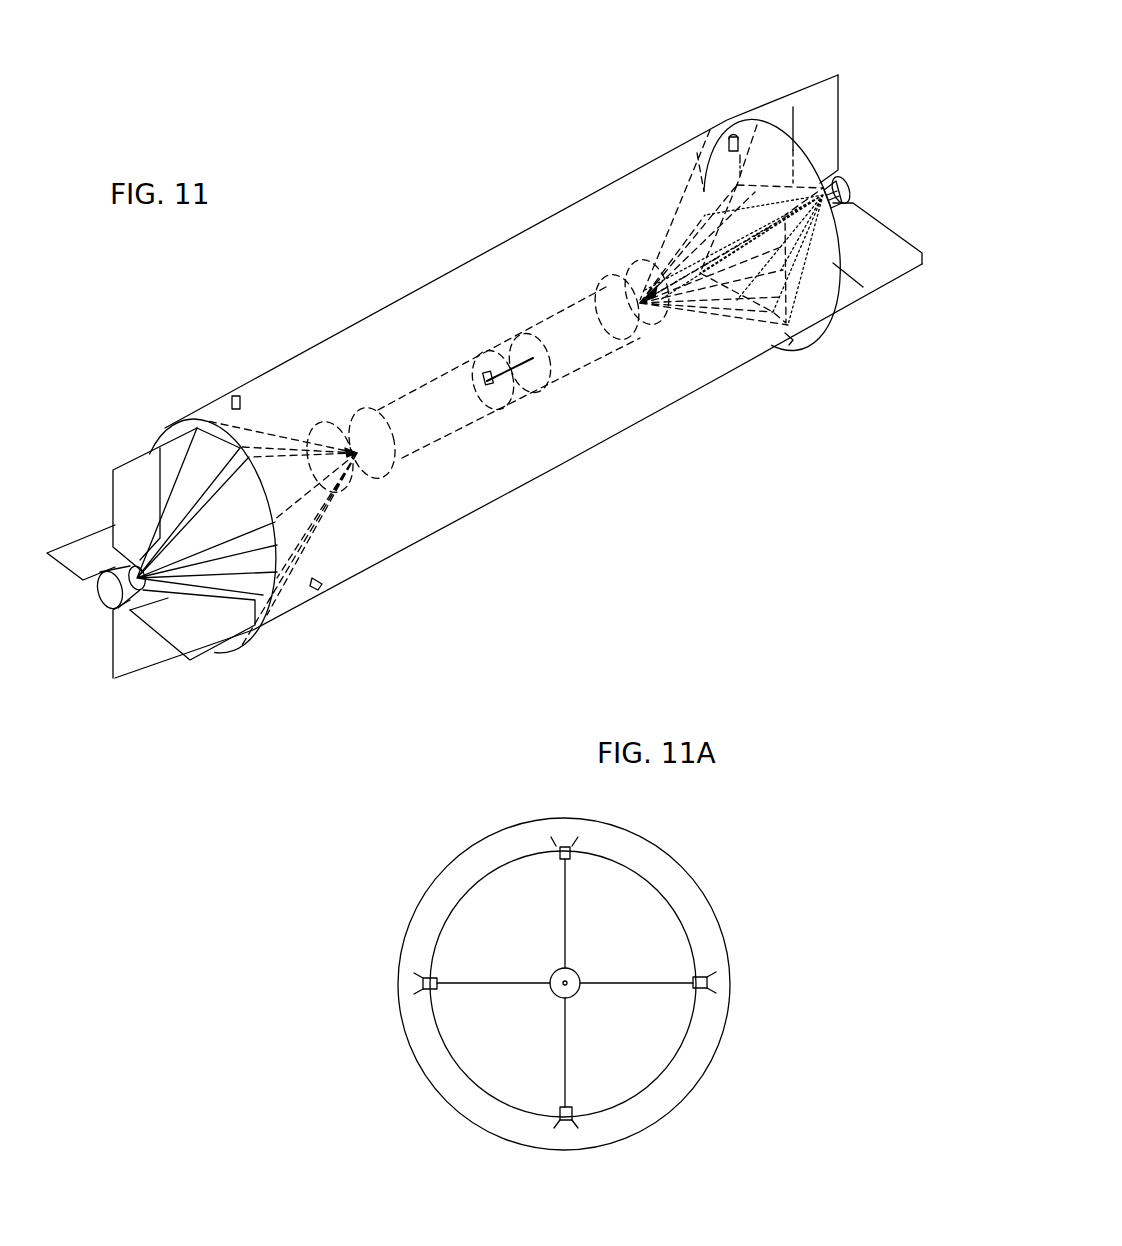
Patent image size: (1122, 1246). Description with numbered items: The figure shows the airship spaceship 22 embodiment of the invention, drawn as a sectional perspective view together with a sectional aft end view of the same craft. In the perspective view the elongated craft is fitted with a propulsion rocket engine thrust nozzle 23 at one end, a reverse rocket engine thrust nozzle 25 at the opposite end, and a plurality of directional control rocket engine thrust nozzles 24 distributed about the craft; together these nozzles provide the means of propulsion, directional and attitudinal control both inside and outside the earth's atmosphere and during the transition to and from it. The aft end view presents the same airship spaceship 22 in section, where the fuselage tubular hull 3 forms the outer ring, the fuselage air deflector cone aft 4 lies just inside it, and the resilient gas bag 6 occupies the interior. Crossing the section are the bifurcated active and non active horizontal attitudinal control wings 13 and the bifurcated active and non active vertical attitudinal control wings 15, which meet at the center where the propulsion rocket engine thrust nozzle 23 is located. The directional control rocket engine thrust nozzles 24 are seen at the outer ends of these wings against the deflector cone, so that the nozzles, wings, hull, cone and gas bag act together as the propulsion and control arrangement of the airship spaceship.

In FIG. 11, the airship spaceship 22 is at (383, 258).
In FIG. 11A, the airship spaceship 22 is at (554, 993).
In FIG. 11, the propulsion rocket engine thrust nozzle 23 is at (95, 602).
In FIG. 11A, the propulsion rocket engine thrust nozzle 23 is at (557, 993).
In FIG. 11, the directional control rocket engine thrust nozzles 24 is at (713, 143).
In FIG. 11A, the directional control rocket engine thrust nozzles 24 is at (557, 855).
In FIG. 11, the reverse rocket engine thrust nozzle 25 is at (853, 180).
In FIG. 11A, the fuselage tubular hull 3 is at (660, 843).
In FIG. 11A, the fuselage air deflector cone aft 4 is at (667, 890).
In FIG. 11A, the resilient gas bag 6 is at (643, 943).
In FIG. 11A, the bifurcated active and non active horizontal attitudinal control wings 13 is at (678, 988).
In FIG. 11A, the bifurcated active and non active vertical attitudinal control wings 15 is at (570, 1074).